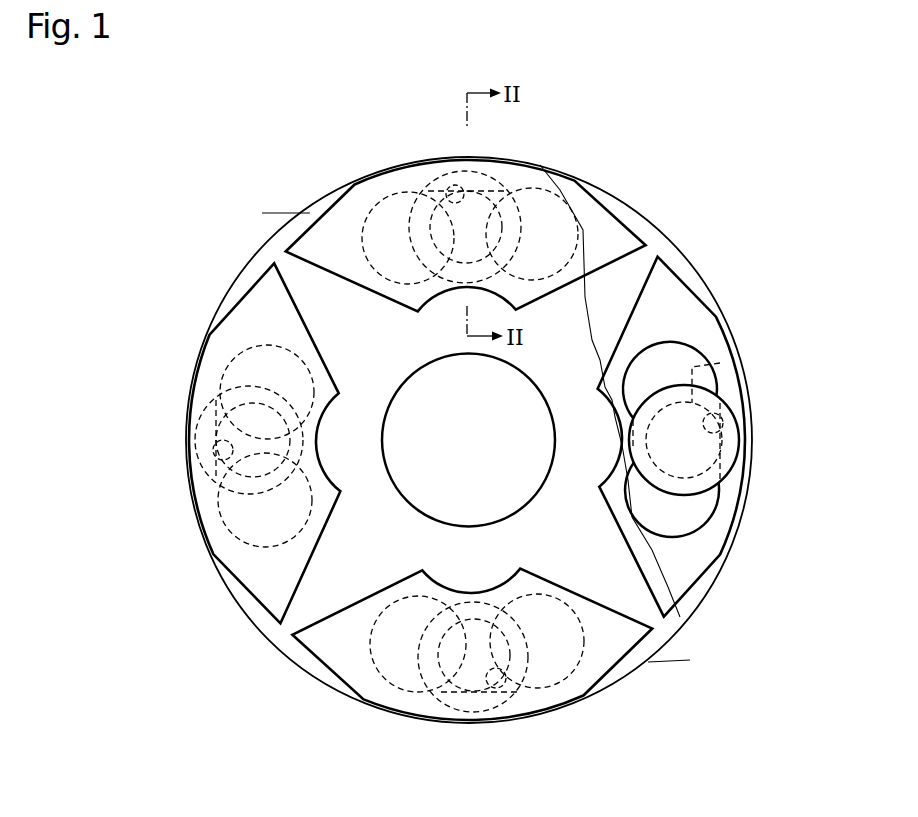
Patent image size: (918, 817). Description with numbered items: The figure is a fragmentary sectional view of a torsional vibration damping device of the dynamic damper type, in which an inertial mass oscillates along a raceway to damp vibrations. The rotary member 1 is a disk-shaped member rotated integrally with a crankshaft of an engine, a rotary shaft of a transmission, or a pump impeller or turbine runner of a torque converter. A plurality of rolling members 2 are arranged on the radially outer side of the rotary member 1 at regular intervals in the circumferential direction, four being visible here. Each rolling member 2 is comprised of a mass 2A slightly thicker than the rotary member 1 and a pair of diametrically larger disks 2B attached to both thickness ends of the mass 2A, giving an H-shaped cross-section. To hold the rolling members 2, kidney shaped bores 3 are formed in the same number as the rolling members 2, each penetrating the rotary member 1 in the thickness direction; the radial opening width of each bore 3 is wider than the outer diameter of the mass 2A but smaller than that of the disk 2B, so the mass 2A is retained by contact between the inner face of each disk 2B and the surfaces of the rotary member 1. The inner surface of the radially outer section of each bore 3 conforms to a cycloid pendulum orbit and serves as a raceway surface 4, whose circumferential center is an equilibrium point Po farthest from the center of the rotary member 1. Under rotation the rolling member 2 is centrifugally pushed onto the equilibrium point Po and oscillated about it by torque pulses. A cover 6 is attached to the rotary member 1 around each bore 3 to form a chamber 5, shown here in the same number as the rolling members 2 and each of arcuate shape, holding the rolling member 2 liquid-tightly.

The rotary member 1 is at (245, 264).
The rolling member 2 is at (496, 172).
The mass 2A is at (367, 212).
The disk 2B is at (420, 170).
The kidney shaped bore 3 is at (560, 212).
The raceway surface 4 is at (520, 200).
The chamber 5 is at (615, 230).
The cover 6 is at (260, 266).
The equilibrium point Po is at (450, 185).